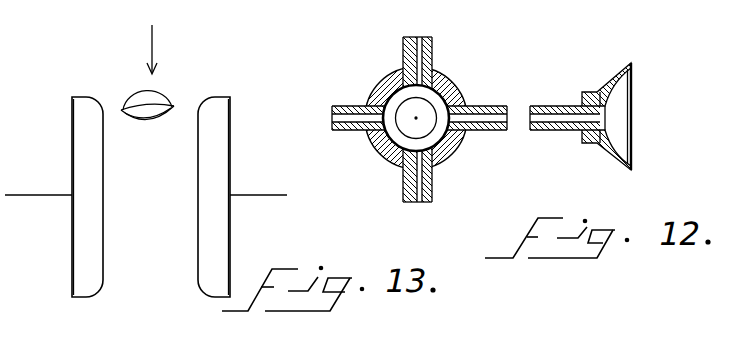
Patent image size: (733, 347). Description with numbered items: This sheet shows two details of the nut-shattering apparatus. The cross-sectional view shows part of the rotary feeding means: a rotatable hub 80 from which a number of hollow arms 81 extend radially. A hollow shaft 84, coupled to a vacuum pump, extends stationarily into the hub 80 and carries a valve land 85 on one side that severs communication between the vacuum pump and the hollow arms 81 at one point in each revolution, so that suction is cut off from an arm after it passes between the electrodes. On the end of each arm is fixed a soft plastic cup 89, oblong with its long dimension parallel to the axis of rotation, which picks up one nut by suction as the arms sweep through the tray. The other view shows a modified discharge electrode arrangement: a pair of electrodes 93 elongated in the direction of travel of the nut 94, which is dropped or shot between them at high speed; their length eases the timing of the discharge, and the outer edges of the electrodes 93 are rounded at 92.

In FIG. 12, the rotatable hub 80 is at (385, 83).
In FIG. 12, the hollow arms 81 is at (430, 55).
In FIG. 12, the hollow shaft 84 is at (396, 137).
In FIG. 12, the valve land 85 is at (441, 130).
In FIG. 12, the soft plastic cup 89 is at (612, 80).
In FIG. 13, the rounded outer edges 92 is at (90, 297).
In FIG. 13, the electrodes 93 is at (202, 225).
In FIG. 13, the nut 94 is at (170, 92).